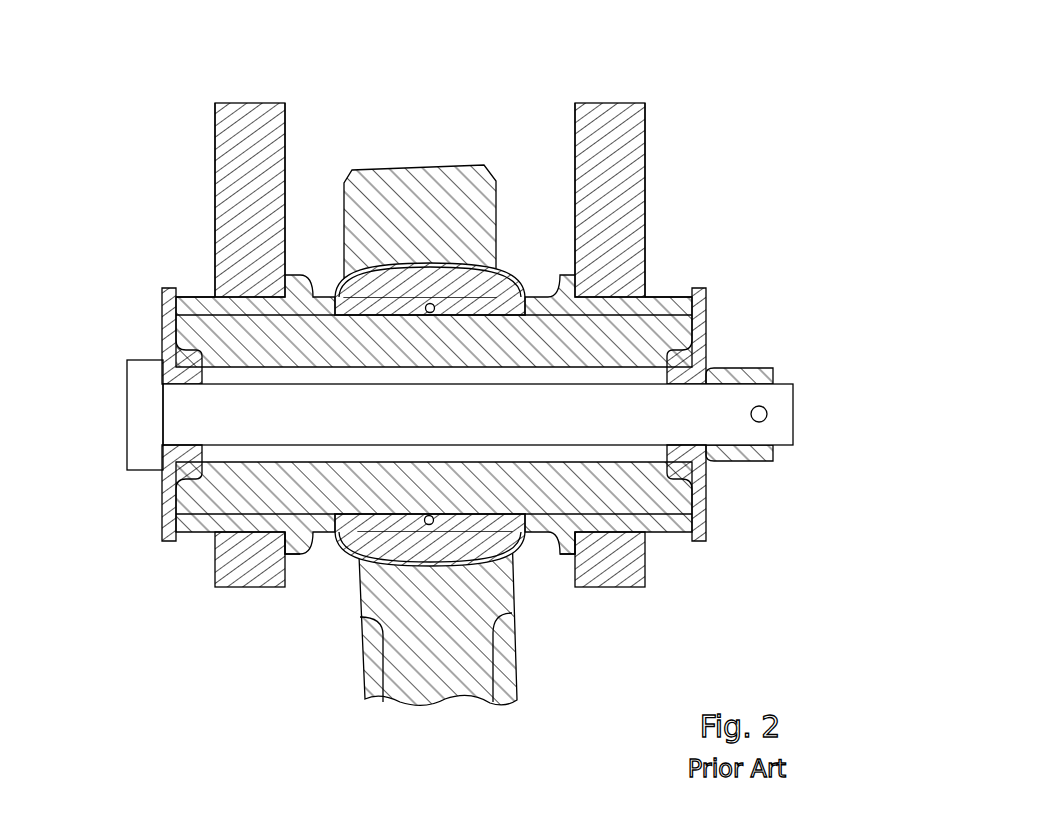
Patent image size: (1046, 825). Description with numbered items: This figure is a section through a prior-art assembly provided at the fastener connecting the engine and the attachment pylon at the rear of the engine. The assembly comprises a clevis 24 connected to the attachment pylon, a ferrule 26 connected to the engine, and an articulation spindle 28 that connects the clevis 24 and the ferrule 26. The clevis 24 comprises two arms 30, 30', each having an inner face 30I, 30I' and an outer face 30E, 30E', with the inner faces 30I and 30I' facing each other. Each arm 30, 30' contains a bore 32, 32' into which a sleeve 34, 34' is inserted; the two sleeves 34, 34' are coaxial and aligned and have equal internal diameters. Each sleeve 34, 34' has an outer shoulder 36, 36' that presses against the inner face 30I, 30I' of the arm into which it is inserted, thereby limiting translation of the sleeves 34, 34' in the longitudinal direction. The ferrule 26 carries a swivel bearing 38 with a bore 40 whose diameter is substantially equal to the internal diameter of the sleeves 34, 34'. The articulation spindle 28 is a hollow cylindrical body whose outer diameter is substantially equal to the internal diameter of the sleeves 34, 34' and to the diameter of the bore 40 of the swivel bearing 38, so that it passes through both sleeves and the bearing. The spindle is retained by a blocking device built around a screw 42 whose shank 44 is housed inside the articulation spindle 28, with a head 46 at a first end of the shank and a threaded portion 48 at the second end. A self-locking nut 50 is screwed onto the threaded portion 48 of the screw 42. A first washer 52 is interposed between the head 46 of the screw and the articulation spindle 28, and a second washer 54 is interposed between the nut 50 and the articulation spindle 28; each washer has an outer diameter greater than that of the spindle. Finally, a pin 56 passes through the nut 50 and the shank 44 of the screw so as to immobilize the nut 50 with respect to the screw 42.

The clevis 24 is at (665, 167).
The ferrule 26 is at (520, 676).
The articulation spindle 28 is at (308, 337).
The arm 30 is at (240, 161).
The arm 30' is at (610, 161).
The outer face 30E is at (163, 191).
The outer face 30E' is at (689, 176).
The inner face 30I is at (307, 151).
The inner face 30I' is at (542, 170).
The bore 32 is at (162, 256).
The bore 32' is at (700, 262).
The sleeve 34 is at (219, 590).
The sleeve 34' is at (665, 564).
The outer shoulder 36 is at (263, 611).
The outer shoulder 36' is at (552, 598).
The swivel bearing 38 is at (420, 258).
The bore 40 is at (447, 320).
The screw 42 is at (125, 420).
The shank 44 is at (345, 420).
The head 46 is at (150, 452).
The threaded portion 48 is at (745, 441).
The self-locking nut 50 is at (735, 370).
The first washer 52 is at (170, 305).
The second washer 54 is at (700, 515).
The pin 56 is at (764, 408).